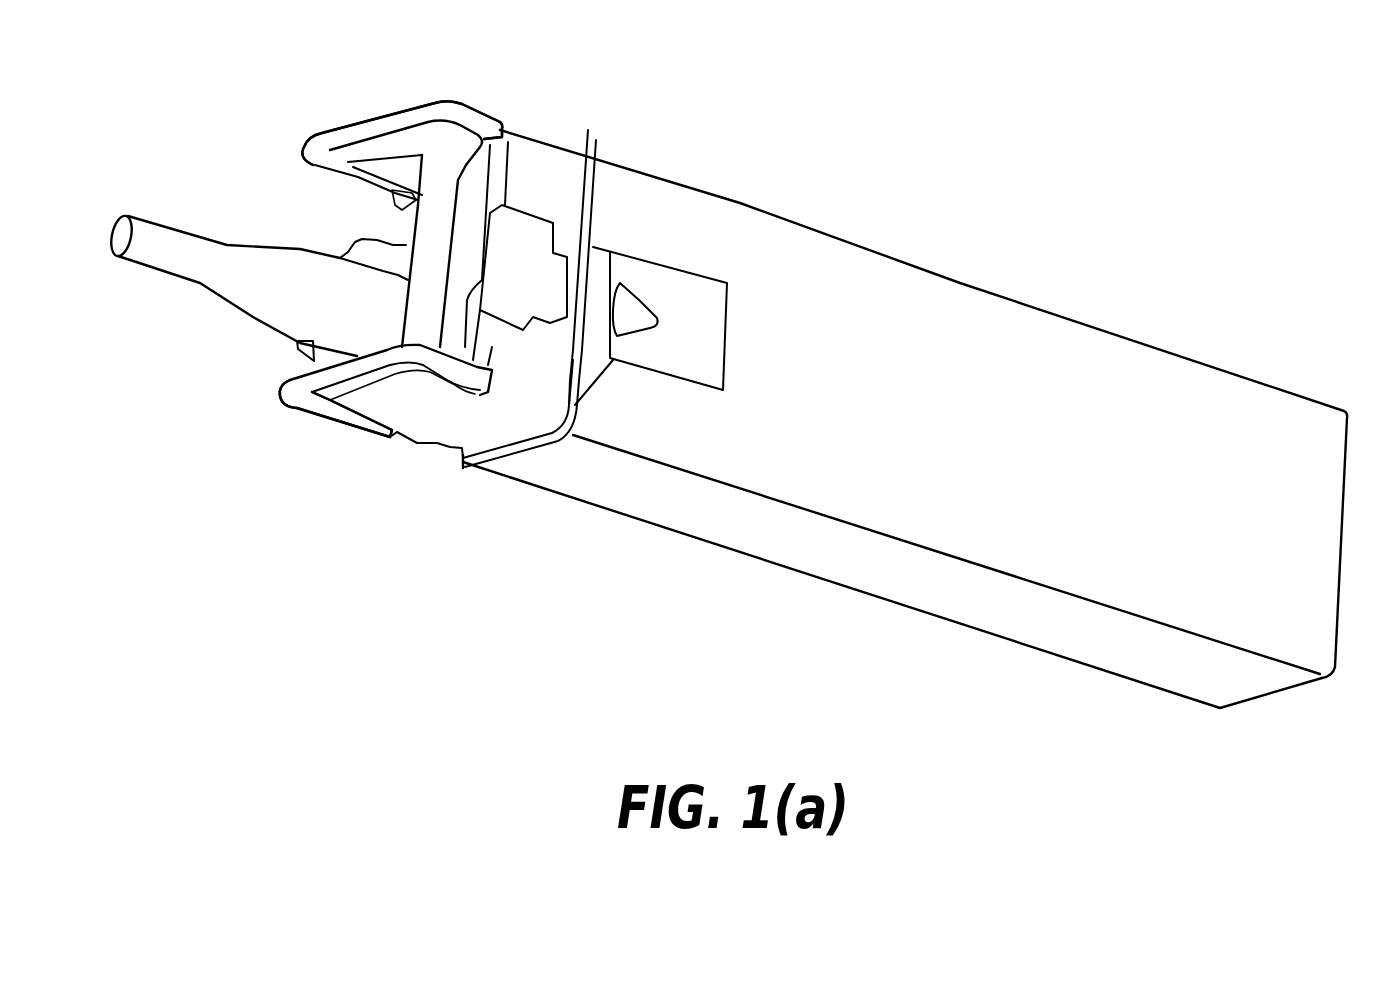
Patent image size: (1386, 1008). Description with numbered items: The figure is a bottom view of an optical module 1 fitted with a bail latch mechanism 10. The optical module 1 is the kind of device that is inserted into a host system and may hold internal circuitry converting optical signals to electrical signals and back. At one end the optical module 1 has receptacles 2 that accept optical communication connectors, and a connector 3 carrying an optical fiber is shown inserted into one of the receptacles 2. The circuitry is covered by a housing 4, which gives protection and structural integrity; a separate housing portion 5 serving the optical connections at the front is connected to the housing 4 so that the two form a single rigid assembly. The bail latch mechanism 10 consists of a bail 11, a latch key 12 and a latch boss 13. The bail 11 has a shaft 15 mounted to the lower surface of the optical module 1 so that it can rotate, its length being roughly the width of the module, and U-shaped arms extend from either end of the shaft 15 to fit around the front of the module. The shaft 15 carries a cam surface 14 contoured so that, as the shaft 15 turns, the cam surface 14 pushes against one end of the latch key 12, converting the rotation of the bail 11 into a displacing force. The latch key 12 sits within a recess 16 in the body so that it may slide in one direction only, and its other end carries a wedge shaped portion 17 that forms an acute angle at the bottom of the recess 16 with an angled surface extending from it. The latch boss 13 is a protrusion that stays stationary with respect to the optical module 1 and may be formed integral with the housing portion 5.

The optical module 1 is at (1028, 168).
The receptacles 2 is at (312, 201).
The connector 3 is at (253, 318).
The housing 4 is at (1000, 560).
The housing portion 5 is at (437, 430).
The bail latch mechanism 10 is at (503, 84).
The bail 11 is at (377, 122).
The latch key 12 is at (590, 237).
The latch boss 13 is at (640, 312).
The cam surface 14 is at (592, 152).
The shaft 15 is at (443, 205).
The recess 16 is at (598, 283).
The wedge shaped portion 17 is at (558, 365).